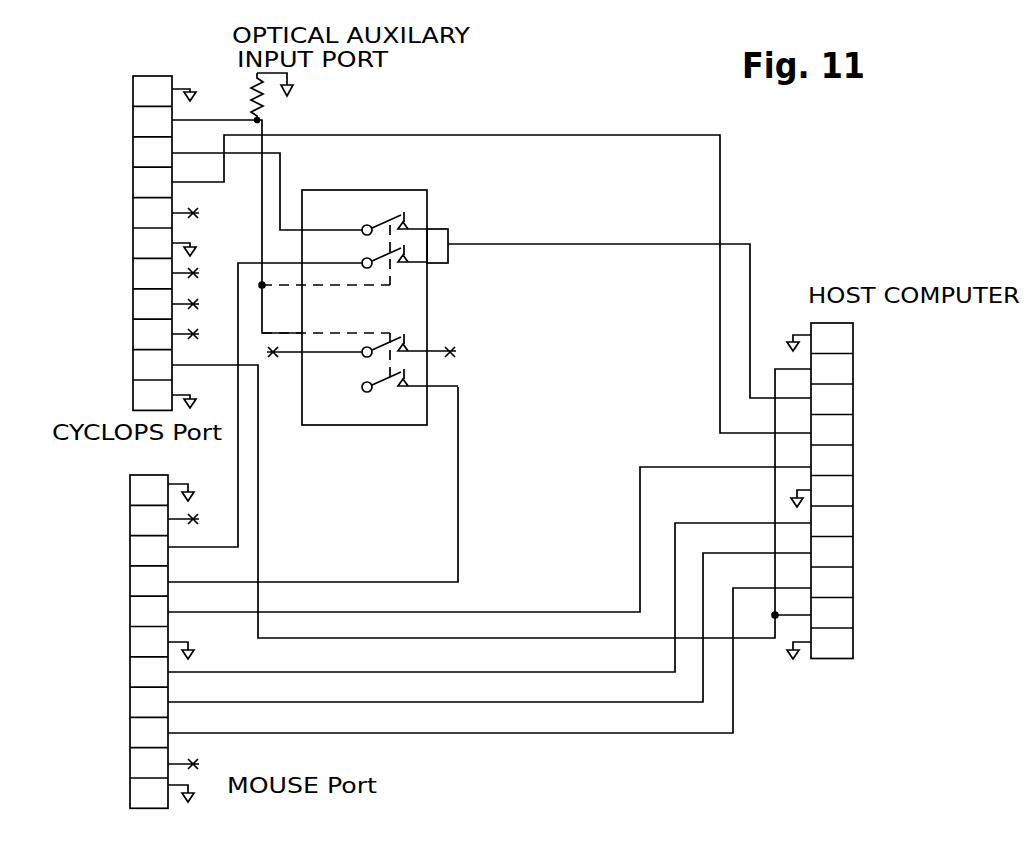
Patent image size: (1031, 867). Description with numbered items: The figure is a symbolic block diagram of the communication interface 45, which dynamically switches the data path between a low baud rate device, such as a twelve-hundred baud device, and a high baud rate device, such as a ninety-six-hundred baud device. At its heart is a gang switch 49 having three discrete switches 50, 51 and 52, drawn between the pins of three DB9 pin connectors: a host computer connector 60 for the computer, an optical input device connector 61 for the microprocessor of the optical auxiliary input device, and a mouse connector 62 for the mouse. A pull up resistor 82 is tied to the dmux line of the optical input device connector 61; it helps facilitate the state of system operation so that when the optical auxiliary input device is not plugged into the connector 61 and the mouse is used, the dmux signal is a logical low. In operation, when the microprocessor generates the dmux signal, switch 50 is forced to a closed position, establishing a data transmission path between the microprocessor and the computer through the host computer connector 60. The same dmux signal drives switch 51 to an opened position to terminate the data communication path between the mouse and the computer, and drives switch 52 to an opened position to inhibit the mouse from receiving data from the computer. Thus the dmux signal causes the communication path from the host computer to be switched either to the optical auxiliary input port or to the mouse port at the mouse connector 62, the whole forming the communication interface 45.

The communication interface 45 is at (826, 750).
The gang switch 49 is at (442, 295).
The switch 50 is at (414, 224).
The switch 51 is at (420, 266).
The switch 52 is at (412, 389).
The host computer connector 60 is at (846, 692).
The optical input device connector 61 is at (181, 28).
The mouse connector 62 is at (142, 816).
The pull up resistor 82 is at (263, 100).